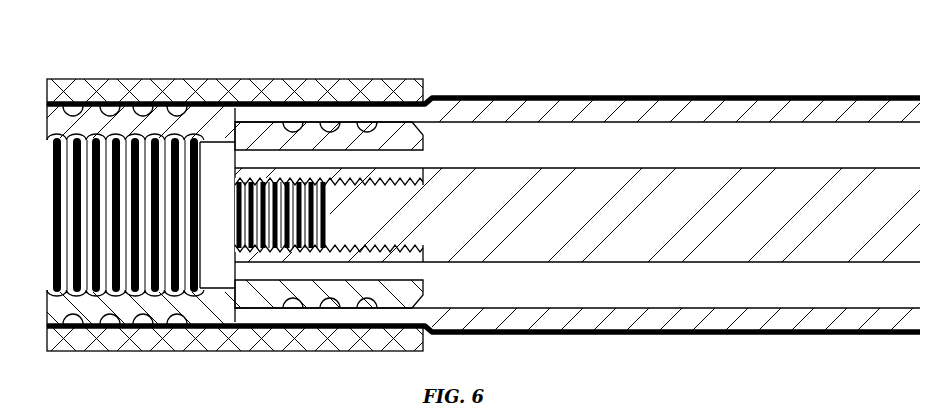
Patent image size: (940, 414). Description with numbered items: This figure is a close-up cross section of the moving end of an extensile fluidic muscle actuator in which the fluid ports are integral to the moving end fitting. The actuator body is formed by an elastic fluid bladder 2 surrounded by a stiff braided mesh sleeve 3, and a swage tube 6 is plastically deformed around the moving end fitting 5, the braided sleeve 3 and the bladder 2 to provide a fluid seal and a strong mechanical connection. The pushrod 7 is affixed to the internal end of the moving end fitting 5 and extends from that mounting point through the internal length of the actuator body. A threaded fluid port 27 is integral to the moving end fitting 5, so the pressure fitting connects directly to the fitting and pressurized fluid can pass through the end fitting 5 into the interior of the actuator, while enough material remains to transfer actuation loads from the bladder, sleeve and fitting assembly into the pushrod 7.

The elastic fluid bladder 2 is at (567, 317).
The braided mesh sleeve 3 is at (523, 93).
The moving end fitting 5 is at (193, 302).
The swage tube 6 is at (215, 92).
The pushrod 7 is at (607, 213).
The threaded fluid port 27 is at (294, 268).